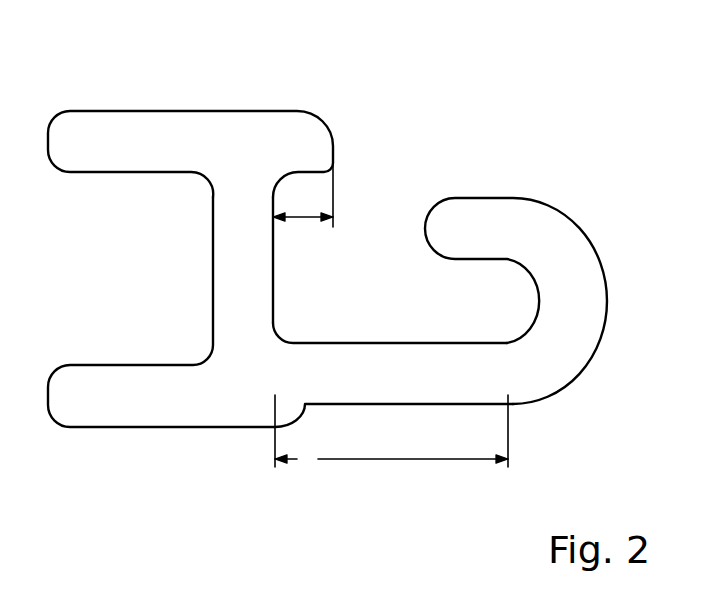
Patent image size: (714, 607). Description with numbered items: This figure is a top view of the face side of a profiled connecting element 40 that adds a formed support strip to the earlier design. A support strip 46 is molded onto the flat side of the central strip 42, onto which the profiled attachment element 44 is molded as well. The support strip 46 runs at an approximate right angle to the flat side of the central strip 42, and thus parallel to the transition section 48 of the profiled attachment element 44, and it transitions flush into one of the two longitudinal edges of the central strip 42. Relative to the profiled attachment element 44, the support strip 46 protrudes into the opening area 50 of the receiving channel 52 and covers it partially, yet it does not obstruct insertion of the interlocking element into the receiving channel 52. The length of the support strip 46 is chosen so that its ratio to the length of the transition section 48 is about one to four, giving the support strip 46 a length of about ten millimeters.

The profiled connecting element 40 is at (508, 110).
The central strip 42 is at (228, 300).
The profiled attachment element 44 is at (588, 230).
The support strip 46 is at (300, 130).
The transition section 48 is at (355, 396).
The opening area 50 is at (377, 177).
The receiving channel 52 is at (358, 282).